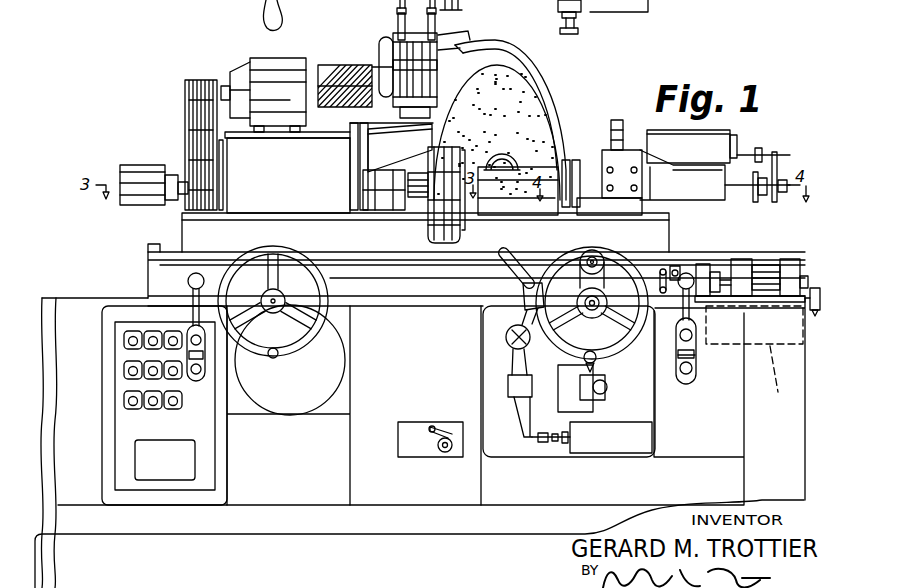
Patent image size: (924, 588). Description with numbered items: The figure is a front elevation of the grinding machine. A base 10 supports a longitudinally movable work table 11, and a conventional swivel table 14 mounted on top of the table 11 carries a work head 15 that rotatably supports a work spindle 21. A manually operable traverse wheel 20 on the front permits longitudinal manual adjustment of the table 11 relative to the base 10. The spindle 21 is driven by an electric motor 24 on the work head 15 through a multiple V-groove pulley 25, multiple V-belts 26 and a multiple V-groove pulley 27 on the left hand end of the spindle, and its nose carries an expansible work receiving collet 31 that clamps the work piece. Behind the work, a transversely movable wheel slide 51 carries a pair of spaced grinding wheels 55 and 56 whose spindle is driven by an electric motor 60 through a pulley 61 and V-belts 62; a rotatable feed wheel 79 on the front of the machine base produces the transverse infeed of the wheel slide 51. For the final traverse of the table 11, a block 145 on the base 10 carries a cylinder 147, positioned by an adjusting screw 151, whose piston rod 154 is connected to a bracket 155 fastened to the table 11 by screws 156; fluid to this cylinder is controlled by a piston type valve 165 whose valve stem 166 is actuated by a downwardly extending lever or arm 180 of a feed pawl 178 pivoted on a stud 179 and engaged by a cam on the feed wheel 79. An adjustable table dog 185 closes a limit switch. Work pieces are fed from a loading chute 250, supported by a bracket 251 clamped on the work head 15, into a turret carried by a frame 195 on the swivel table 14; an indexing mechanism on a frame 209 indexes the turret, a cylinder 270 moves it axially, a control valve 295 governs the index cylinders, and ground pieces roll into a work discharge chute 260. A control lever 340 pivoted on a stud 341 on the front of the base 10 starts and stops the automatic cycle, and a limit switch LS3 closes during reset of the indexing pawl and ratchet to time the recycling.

The base 10 is at (82, 306).
The work table 11 is at (155, 282).
The swivel table 14 is at (190, 236).
The work head 15 is at (300, 192).
The traverse wheel 20 is at (318, 356).
The work spindle 21 is at (375, 204).
The electric motor 24 is at (242, 72).
The multiple V-groove pulley 25 is at (187, 84).
The multiple V-belts 26 is at (190, 120).
The multiple V-groove pulley 27 is at (184, 164).
The expansible work receiving collet 31 is at (422, 178).
The wheel slide 51 is at (330, 122).
The grinding wheel 55 is at (500, 54).
The grinding wheel 56 is at (548, 116).
The electric motor 60 is at (468, 36).
The multiple V-groove pulley 61 is at (366, 70).
The multiple V-belts 62 is at (328, 66).
The feed wheel 79 is at (652, 1).
The block 145 is at (772, 346).
The cylinder 147 is at (770, 259).
The adjusting screw 151 is at (818, 290).
The piston rod 154 is at (656, 300).
The bracket 155 is at (708, 264).
The screws 156 is at (724, 300).
The piston type valve 165 is at (631, 439).
The valve stem 166 is at (560, 445).
The feed pawl 178 is at (522, 312).
The stud 179 is at (506, 337).
The lever or arm 180 is at (518, 416).
The adjustable table dog 185 is at (676, 264).
The frame 195 is at (526, 217).
The frame 209 is at (600, 217).
The loading chute 250 is at (392, 30).
The bracket 251 is at (364, 160).
The work discharge chute 260 is at (421, 233).
The cylinder 270 is at (720, 176).
The control valve 295 is at (718, 166).
The control lever 340 is at (698, 372).
The stud 341 is at (697, 353).
The limit switch LS3 is at (614, 118).